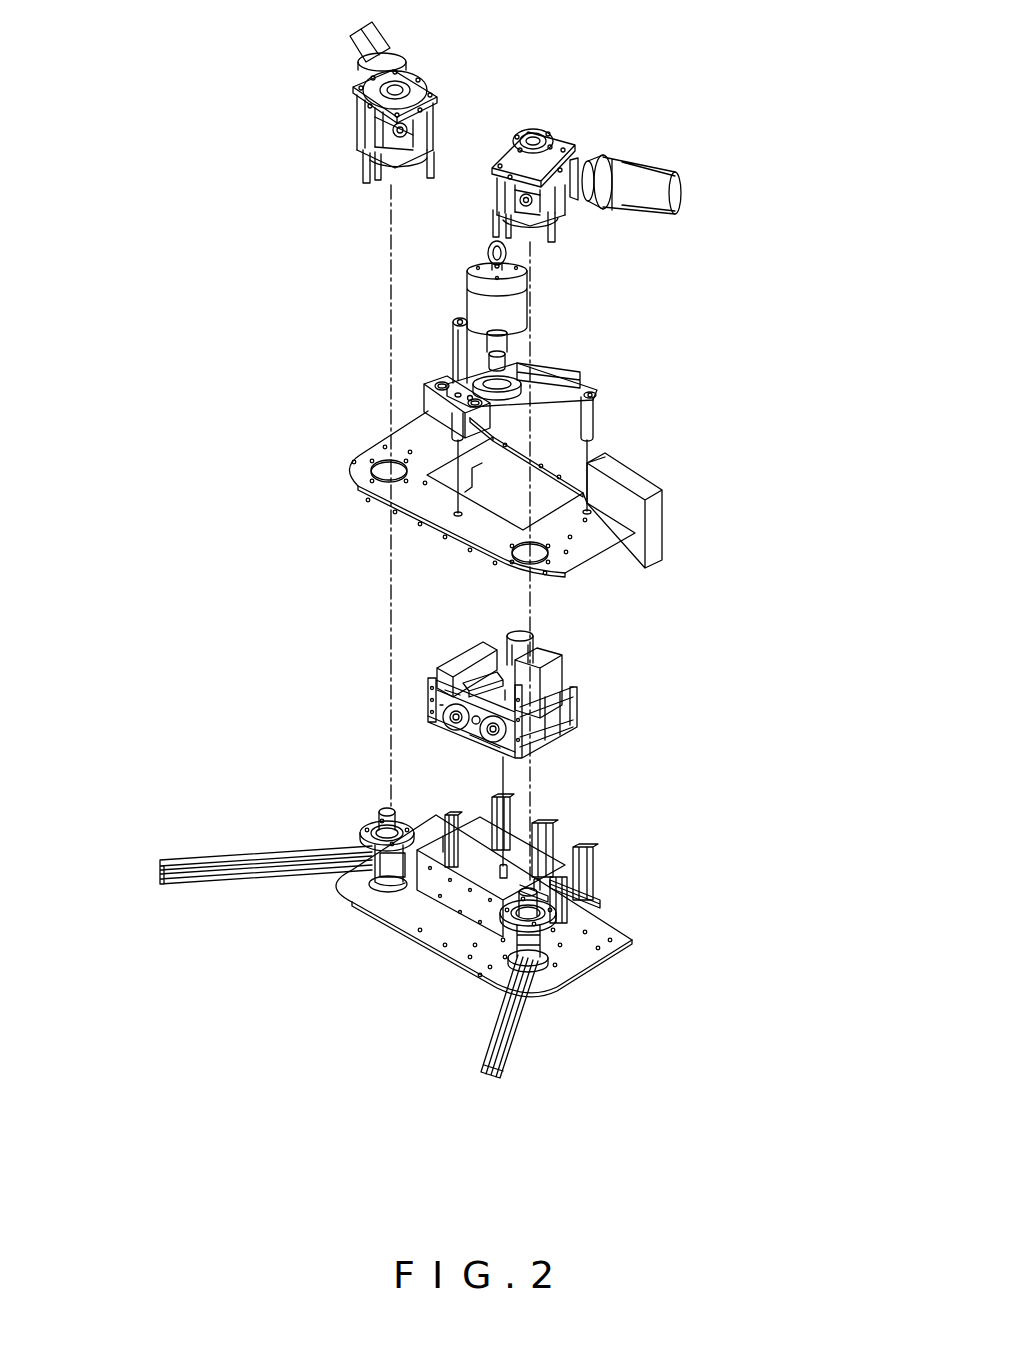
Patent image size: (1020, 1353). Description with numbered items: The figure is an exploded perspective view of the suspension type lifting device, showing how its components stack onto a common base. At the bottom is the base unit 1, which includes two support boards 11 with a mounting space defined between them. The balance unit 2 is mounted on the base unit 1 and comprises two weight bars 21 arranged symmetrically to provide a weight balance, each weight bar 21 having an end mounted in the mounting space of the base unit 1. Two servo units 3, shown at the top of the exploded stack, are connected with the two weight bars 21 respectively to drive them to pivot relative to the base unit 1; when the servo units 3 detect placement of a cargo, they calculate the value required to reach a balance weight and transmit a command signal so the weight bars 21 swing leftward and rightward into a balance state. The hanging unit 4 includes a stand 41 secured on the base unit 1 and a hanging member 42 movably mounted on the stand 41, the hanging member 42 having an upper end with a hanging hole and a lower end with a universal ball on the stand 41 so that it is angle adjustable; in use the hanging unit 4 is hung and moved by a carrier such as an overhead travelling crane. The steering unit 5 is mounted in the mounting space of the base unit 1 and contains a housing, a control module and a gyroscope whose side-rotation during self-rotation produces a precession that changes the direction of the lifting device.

The base unit 1 is at (597, 960).
The support board 11 is at (397, 928).
The balance unit 2 is at (237, 843).
The weight bar 21 is at (258, 882).
The servo unit 3 is at (330, 103).
The hanging unit 4 is at (530, 307).
The stand 41 is at (597, 396).
The hanging member 42 is at (488, 310).
The steering unit 5 is at (575, 673).